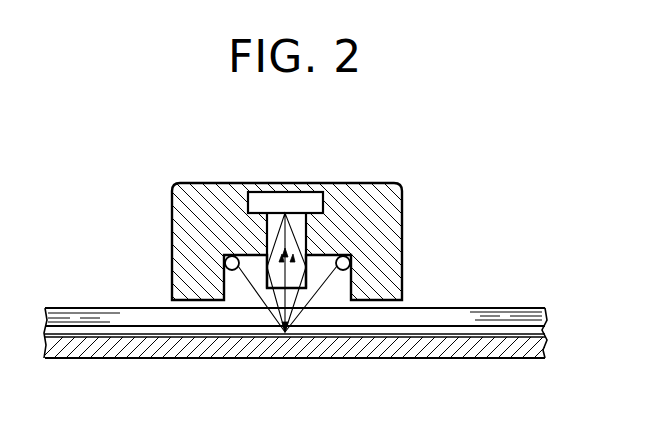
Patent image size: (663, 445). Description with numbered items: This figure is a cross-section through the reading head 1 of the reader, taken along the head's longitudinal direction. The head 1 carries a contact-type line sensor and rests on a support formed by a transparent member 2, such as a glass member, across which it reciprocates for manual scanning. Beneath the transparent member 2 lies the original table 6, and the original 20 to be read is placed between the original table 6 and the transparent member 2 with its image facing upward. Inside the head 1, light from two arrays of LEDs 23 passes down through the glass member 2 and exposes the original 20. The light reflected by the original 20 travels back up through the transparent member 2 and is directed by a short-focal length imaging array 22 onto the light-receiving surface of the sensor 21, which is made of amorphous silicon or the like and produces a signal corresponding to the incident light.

The reading head 1 is at (393, 191).
The transparent member 2 is at (522, 312).
The original table 6 is at (503, 352).
The original 20 is at (118, 338).
The sensor 21 is at (295, 198).
The imaging array 22 is at (297, 257).
The LEDs 23 is at (226, 267).